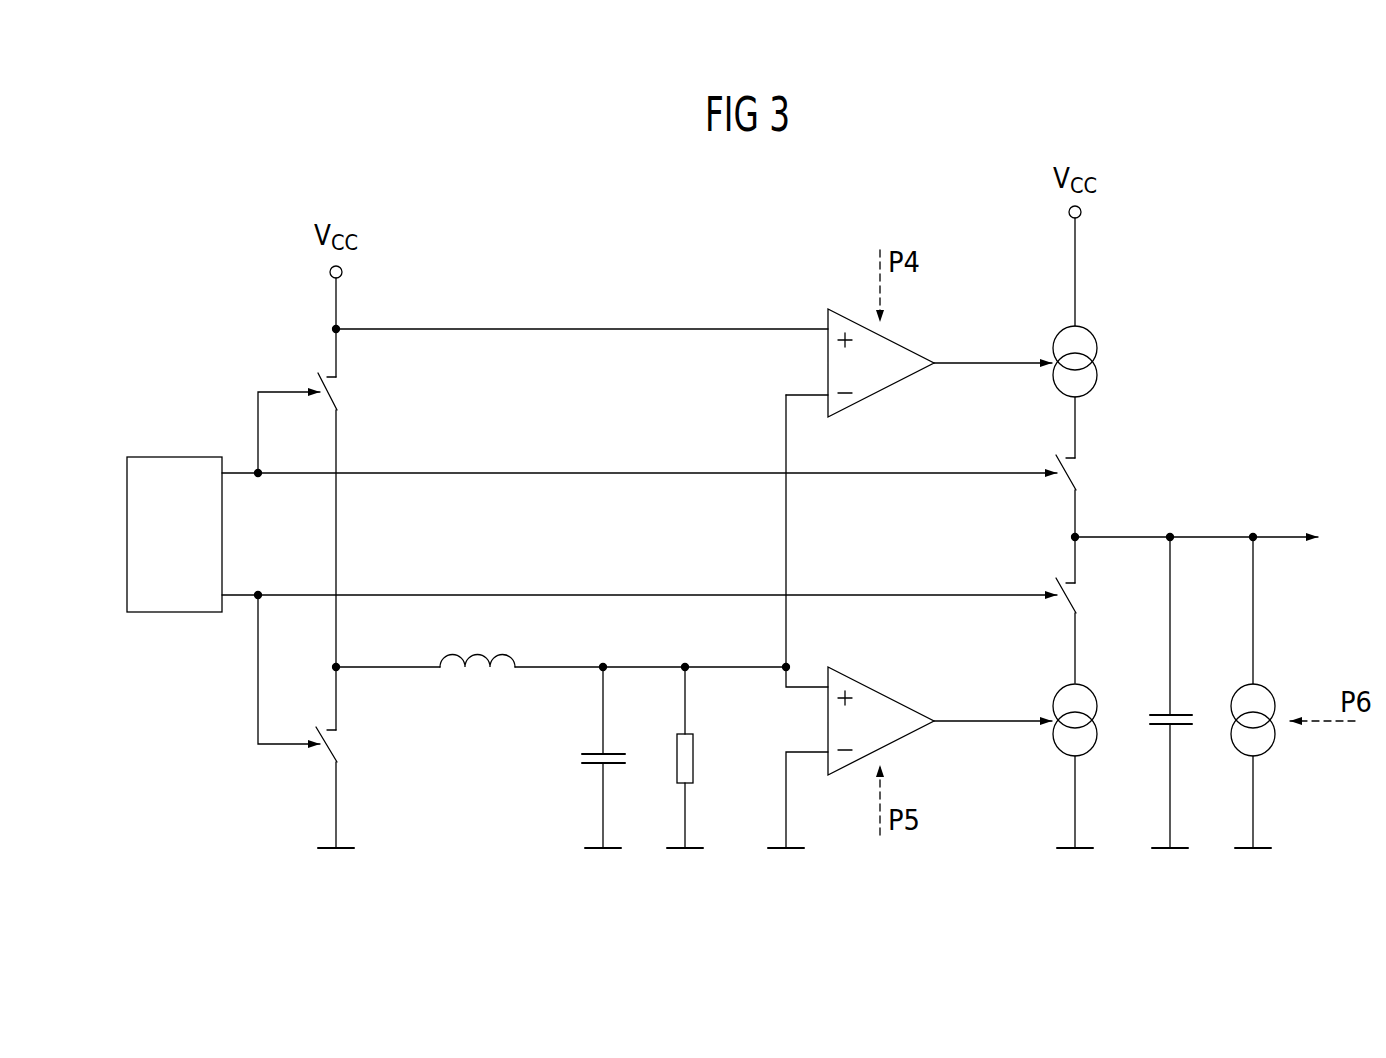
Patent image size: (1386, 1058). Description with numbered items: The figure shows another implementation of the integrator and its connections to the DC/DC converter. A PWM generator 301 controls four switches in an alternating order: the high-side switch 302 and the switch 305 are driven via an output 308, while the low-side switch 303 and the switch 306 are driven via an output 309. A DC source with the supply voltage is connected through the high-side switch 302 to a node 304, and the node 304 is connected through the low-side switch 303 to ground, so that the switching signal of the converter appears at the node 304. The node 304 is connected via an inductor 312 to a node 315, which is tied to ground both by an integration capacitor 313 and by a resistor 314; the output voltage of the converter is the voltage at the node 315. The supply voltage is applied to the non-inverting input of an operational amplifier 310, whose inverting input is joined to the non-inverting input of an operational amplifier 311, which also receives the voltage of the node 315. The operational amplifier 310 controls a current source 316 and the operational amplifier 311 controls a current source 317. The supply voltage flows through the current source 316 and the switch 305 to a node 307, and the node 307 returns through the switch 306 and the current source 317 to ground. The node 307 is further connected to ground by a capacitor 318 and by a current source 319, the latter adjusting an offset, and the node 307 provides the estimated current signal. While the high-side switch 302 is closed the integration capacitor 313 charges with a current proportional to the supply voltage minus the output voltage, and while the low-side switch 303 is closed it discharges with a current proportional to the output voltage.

The PWM generator 301 is at (151, 456).
The high-side switch 302 is at (338, 392).
The low-side switch 303 is at (340, 748).
The node 304 is at (340, 670).
The switch 305 is at (1078, 475).
The switch 306 is at (1078, 598).
The node 307 is at (1072, 537).
The output 308 is at (224, 470).
The output 309 is at (226, 600).
The operational amplifier 310 is at (932, 328).
The operational amplifier 311 is at (883, 691).
The inductor 312 is at (477, 672).
The capacitor 313 is at (590, 766).
The resistor 314 is at (695, 758).
The node 315 is at (600, 670).
The current source 316 is at (1097, 348).
The current source 317 is at (1058, 748).
The capacitor 318 is at (1158, 728).
The current source 319 is at (1272, 746).